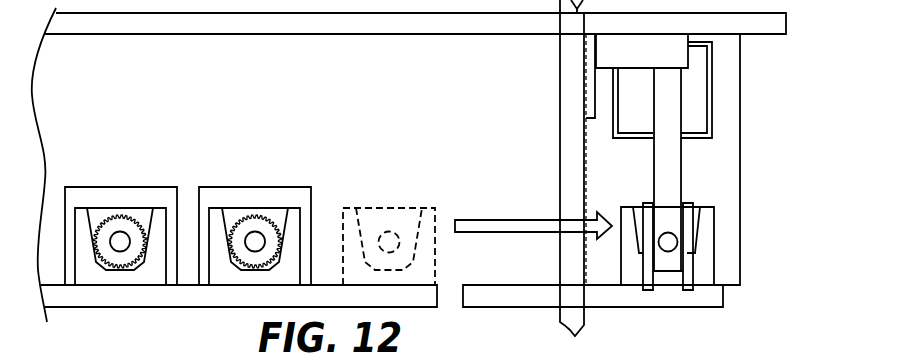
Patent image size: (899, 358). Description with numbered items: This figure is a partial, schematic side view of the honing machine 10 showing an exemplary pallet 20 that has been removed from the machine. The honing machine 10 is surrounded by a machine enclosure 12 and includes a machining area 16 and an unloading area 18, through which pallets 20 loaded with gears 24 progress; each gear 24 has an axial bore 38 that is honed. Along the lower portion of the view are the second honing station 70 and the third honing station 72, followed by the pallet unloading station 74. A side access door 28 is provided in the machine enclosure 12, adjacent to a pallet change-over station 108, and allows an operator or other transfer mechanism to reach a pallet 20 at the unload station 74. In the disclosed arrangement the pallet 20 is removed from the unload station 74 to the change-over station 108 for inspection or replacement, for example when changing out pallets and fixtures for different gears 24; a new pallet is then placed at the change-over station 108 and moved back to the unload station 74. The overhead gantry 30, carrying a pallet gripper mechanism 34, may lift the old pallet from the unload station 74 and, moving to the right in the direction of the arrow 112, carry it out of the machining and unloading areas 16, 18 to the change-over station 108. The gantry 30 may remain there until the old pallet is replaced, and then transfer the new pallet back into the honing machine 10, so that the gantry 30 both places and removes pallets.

The honing machine 10 is at (380, 92).
The machine enclosure 12 is at (567, 102).
The machining area 16 is at (143, 86).
The unloading area 18 is at (342, 84).
The pallet 20 is at (435, 210).
The gear 24 is at (240, 223).
The side access door 28 is at (720, 174).
The overhead gantry 30 is at (677, 53).
The pallet gripper mechanism 34 is at (692, 259).
The axial bore 38 is at (262, 225).
The second honing station 70 is at (92, 346).
The third honing station 72 is at (236, 346).
The pallet unloading station 74 is at (461, 346).
The pallet change-over station 108 is at (690, 345).
The arrow 112 is at (522, 232).